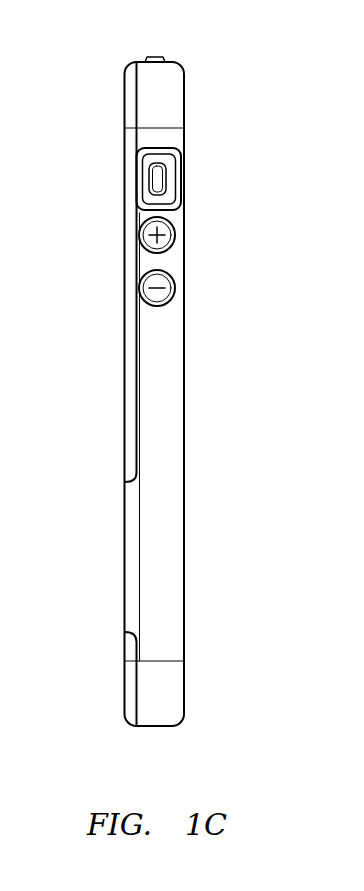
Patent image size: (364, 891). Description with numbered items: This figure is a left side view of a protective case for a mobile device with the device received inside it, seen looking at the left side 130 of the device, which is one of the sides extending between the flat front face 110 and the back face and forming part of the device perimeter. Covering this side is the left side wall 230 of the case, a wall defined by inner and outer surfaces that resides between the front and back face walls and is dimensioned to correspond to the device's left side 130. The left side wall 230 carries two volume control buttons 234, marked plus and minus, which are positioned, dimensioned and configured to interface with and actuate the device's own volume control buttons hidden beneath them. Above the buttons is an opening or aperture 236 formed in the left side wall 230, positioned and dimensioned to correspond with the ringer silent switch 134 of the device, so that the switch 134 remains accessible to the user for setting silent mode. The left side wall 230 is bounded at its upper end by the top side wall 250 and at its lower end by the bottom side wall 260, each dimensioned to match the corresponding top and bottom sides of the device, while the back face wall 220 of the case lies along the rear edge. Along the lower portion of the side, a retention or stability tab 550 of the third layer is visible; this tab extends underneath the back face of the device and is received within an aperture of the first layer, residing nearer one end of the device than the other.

The front face 110 is at (184, 395).
The left side 130 is at (177, 150).
The ringer silent switch 134 is at (150, 180).
The back face wall 220 is at (125, 363).
The left side wall 230 is at (151, 455).
The volume control buttons 234 is at (175, 239).
The opening or aperture 236 is at (136, 152).
The top side wall 250 is at (165, 58).
The bottom side wall 260 is at (150, 727).
The retention or stability tab 550 is at (129, 561).